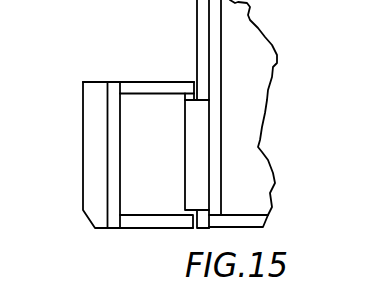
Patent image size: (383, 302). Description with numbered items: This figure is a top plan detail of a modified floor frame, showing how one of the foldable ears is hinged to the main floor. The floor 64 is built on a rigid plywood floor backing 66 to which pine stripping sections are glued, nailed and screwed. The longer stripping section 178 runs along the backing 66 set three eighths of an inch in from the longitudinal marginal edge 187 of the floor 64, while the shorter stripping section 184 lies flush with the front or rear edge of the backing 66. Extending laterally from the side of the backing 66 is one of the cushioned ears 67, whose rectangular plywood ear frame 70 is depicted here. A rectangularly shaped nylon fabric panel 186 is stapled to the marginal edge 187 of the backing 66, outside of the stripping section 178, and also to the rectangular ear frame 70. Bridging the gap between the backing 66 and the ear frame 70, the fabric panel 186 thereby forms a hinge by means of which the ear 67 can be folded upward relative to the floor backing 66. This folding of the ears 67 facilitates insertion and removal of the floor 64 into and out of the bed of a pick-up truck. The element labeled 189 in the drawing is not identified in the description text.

The floor 64 is at (297, 47).
The floor backing 66 is at (234, 170).
The cushioned ears 67 is at (142, 119).
The rectangular ear frame 70 is at (163, 197).
The stripping section 178 is at (213, 87).
The stripping section 184 is at (258, 226).
The nylon fabric panel 186 is at (193, 145).
The marginal edge 187 is at (197, 37).
The top flange of slide body 189 is at (130, 82).